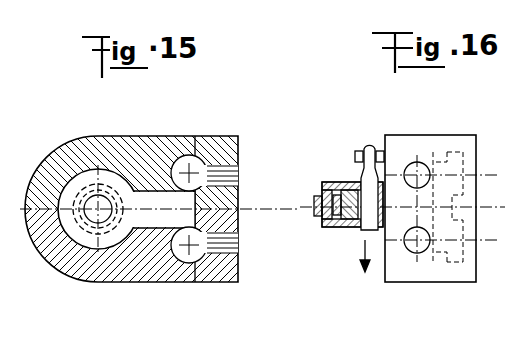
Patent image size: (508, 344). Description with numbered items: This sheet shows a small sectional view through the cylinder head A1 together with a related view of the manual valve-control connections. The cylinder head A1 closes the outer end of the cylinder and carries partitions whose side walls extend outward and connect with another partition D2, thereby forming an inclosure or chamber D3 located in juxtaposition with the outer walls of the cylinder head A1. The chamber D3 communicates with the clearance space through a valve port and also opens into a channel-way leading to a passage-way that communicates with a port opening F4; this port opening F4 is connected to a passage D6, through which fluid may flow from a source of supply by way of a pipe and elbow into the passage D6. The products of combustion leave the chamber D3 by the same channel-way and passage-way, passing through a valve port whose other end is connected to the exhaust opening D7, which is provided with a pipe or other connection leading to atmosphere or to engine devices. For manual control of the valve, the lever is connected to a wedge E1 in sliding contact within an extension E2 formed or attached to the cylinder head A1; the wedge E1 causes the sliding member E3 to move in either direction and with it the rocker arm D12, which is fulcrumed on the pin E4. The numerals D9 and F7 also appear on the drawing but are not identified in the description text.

In FIG. 15, the cylinder head A1 is at (147, 136).
In FIG. 16, the cylinder head A1 is at (432, 136).
In FIG. 15, the chamber D3 is at (75, 181).
In FIG. 15, the exhaust opening D7 is at (238, 176).
In FIG. 16, the exhaust opening D7 is at (410, 167).
In FIG. 15, the passage D6 is at (275, 238).
In FIG. 16, the passage D6 is at (409, 249).
In FIG. 15, the rocker arm D12 is at (318, 210).
In FIG. 15, the housing part D9 is at (99, 334).
In FIG. 15, the fastener F7 is at (180, 339).
In FIG. 15, the port opening F4 is at (220, 343).
In FIG. 16, the partition D2 is at (498, 334).
In FIG. 16, the wedge E1 is at (363, 146).
In FIG. 16, the extension E2 is at (338, 182).
In FIG. 16, the sliding member E3 is at (321, 197).
In FIG. 16, the pin E4 is at (334, 212).